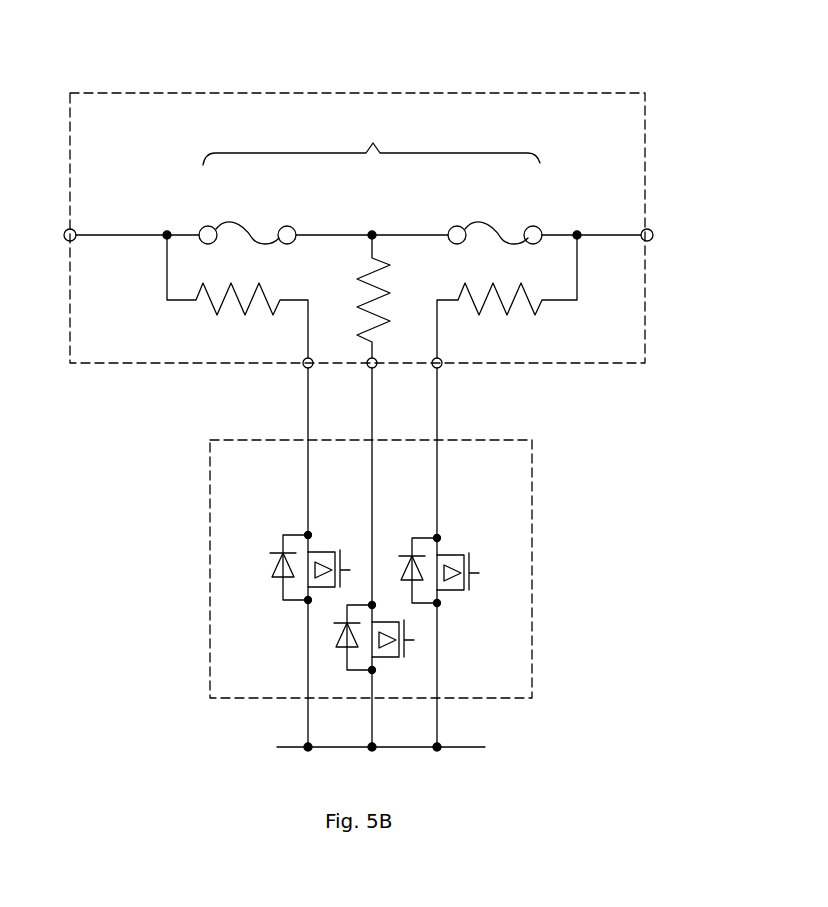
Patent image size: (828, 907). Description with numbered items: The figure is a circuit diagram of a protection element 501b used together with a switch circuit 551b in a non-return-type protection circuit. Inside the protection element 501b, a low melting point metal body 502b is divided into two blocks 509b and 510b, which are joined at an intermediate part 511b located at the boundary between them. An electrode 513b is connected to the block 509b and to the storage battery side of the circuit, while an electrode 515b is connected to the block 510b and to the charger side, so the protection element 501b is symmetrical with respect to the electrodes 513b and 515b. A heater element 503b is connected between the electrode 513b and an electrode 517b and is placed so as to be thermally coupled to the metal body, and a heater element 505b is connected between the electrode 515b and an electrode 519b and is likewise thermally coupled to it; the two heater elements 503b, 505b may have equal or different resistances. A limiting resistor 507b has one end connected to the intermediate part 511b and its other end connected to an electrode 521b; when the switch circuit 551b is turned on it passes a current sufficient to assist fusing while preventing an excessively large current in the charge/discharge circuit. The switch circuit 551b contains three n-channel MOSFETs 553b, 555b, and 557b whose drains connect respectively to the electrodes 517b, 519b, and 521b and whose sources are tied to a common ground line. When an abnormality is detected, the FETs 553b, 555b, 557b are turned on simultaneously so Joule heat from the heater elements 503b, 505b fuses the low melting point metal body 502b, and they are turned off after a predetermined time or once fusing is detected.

The protection element 501b is at (573, 93).
The low melting point metal body 502b is at (371, 137).
The heater element 503b is at (268, 302).
The heater element 505b is at (507, 296).
The limiting resistor 507b is at (388, 318).
The block 509b is at (256, 238).
The block 510b is at (508, 238).
The intermediate part 511b is at (373, 232).
The electrode 513b is at (73, 228).
The electrode 515b is at (652, 231).
The electrode 517b is at (304, 370).
The electrode 519b is at (433, 371).
The electrode 521b is at (368, 371).
The switch circuit 551b is at (532, 440).
The n-channel MOSFET 553b is at (320, 548).
The n-channel MOSFET 555b is at (453, 550).
The n-channel MOSFET 557b is at (385, 660).